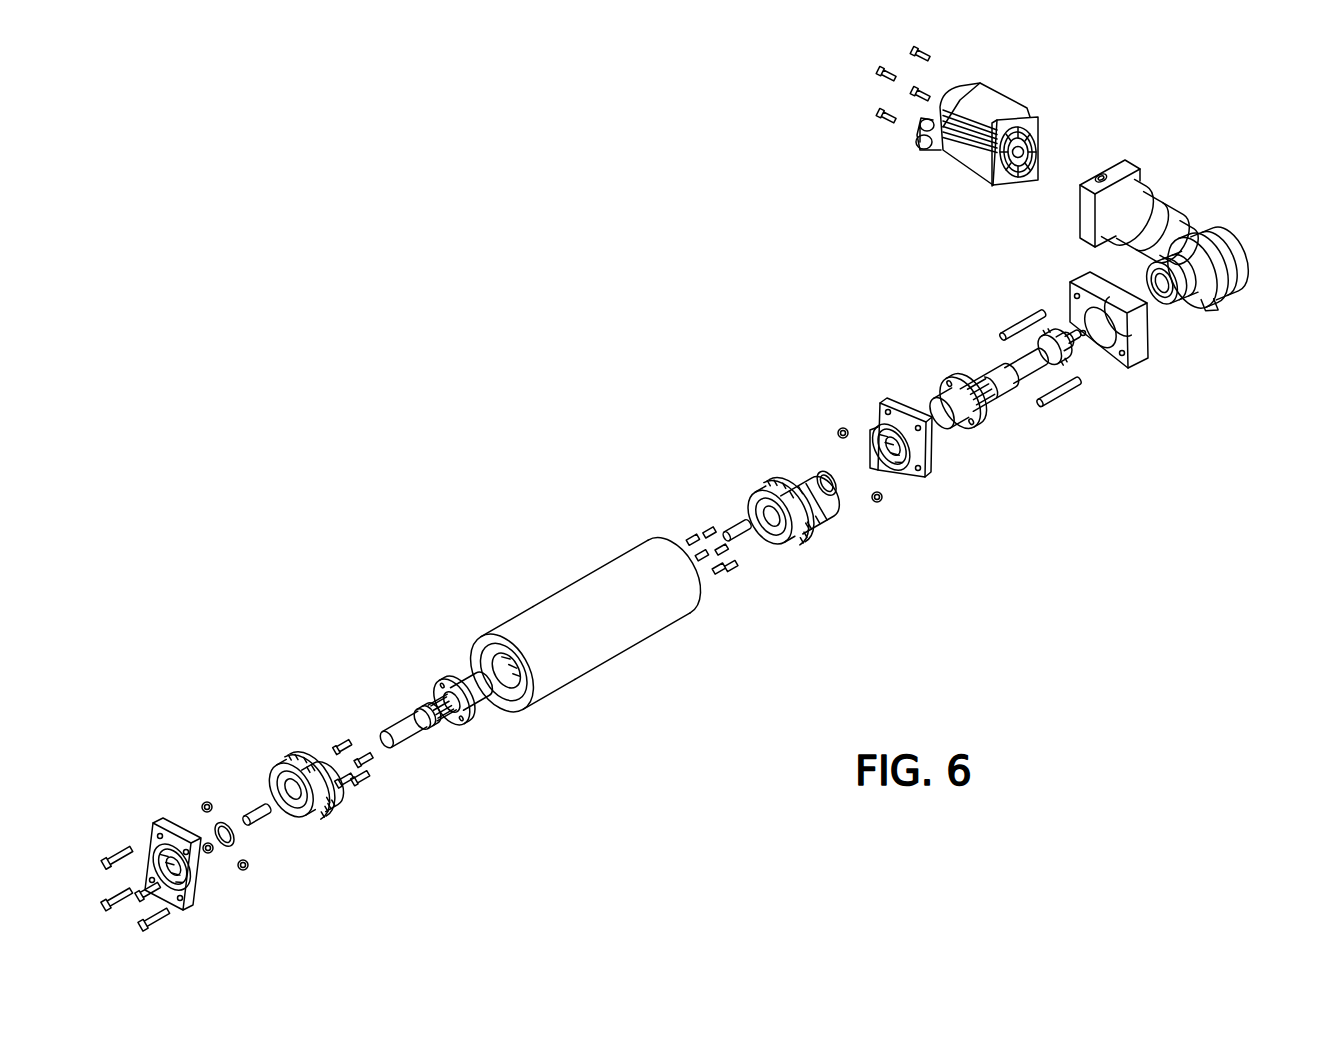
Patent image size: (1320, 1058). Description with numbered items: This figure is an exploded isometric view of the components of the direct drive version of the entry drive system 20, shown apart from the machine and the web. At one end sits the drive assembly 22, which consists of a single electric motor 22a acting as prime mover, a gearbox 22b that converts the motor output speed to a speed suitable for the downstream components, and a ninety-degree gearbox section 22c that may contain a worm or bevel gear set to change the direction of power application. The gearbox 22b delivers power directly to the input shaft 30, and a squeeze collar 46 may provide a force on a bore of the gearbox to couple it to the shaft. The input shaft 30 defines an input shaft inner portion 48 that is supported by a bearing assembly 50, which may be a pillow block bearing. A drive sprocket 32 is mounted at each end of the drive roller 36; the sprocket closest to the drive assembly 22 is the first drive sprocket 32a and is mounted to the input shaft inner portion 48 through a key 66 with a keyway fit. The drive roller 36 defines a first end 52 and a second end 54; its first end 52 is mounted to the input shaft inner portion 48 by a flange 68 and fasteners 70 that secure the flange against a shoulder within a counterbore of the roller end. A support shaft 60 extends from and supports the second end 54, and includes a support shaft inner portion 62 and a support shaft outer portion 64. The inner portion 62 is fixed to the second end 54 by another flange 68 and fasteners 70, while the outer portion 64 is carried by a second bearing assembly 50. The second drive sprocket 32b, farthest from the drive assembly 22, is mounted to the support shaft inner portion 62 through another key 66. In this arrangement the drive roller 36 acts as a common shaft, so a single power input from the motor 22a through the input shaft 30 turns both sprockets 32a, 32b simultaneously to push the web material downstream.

The drive system 20 is at (483, 237).
The drive assembly 22 is at (1091, 172).
The electric motor 22a is at (988, 84).
The gearbox 22b is at (1141, 156).
The 90-degree gearbox section 22c is at (1237, 212).
The input shaft 30 is at (1003, 358).
The drive sprocket 32 is at (542, 608).
The first drive sprocket 32a is at (772, 462).
The second drive sprocket 32b is at (281, 745).
The drive roller 36 is at (612, 625).
The squeeze collar 46 is at (1085, 373).
The input shaft inner portion 48 is at (1015, 412).
The bearing assembly 50 is at (155, 820).
The first end 52 is at (641, 538).
The second end 54 is at (487, 626).
The support shaft 60 is at (460, 758).
The support shaft inner portion 62 is at (500, 725).
The support shaft outer portion 64 is at (407, 762).
The key 66 is at (256, 793).
The flange 68 is at (450, 667).
The fasteners 70 is at (345, 730).